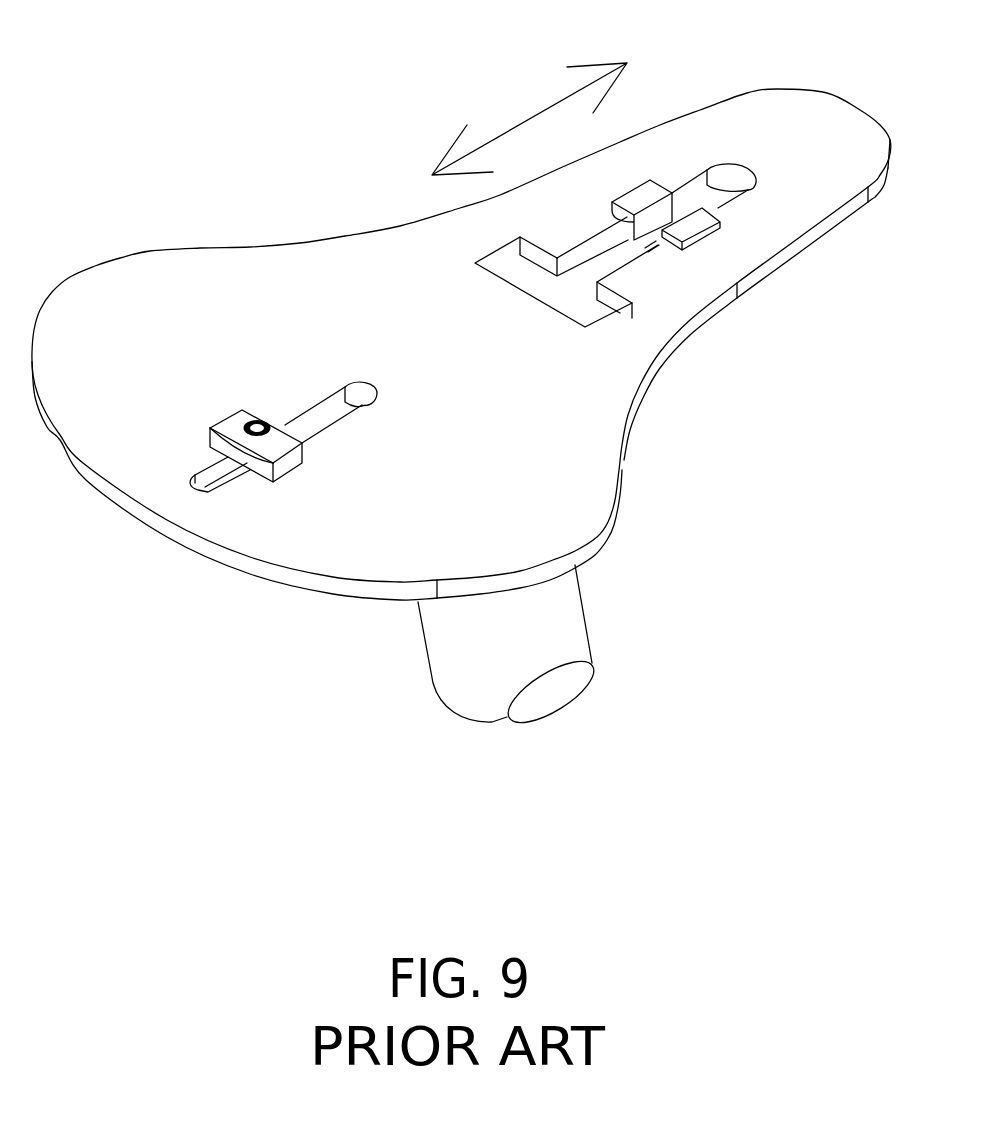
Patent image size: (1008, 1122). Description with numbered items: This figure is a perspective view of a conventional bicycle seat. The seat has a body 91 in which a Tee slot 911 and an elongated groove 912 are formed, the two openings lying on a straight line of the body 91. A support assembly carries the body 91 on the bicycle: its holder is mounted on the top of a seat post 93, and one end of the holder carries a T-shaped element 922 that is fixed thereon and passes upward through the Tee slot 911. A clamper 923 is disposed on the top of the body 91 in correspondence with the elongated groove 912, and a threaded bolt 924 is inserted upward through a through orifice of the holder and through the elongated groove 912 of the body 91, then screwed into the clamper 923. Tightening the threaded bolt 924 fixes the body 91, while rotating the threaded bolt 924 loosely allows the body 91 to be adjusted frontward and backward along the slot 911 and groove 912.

The body 91 is at (378, 205).
The Tee slot 911 is at (725, 193).
The elongated groove 912 is at (312, 420).
The T-shaped element 922 is at (643, 197).
The clamper 923 is at (288, 463).
The threaded bolt 924 is at (256, 422).
The seat post 93 is at (613, 603).